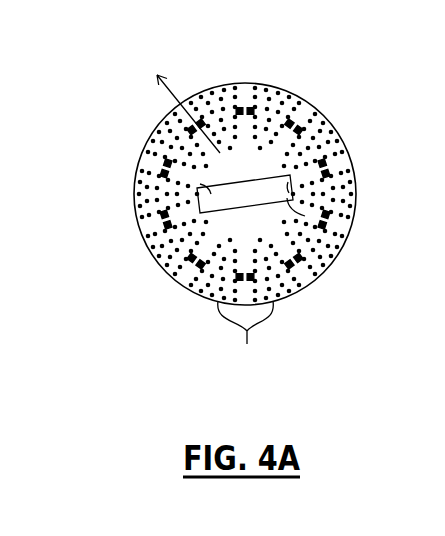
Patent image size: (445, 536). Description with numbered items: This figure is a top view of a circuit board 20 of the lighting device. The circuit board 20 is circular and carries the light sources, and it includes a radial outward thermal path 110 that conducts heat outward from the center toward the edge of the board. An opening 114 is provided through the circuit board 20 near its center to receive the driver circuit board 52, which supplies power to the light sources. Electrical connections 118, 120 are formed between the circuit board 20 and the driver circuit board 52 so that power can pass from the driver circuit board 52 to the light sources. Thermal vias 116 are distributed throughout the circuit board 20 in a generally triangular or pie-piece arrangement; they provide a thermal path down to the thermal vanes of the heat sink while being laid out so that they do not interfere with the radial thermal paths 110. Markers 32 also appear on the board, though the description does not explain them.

The circuit board 20 is at (306, 100).
The marker squares 32 is at (253, 108).
The driver circuit board 52 is at (293, 184).
The radial outward thermal path 110 is at (173, 94).
The opening 114 is at (305, 216).
The thermal vias 116 is at (246, 335).
The electrical connection 118 is at (200, 184).
The electrical connection 120 is at (288, 182).